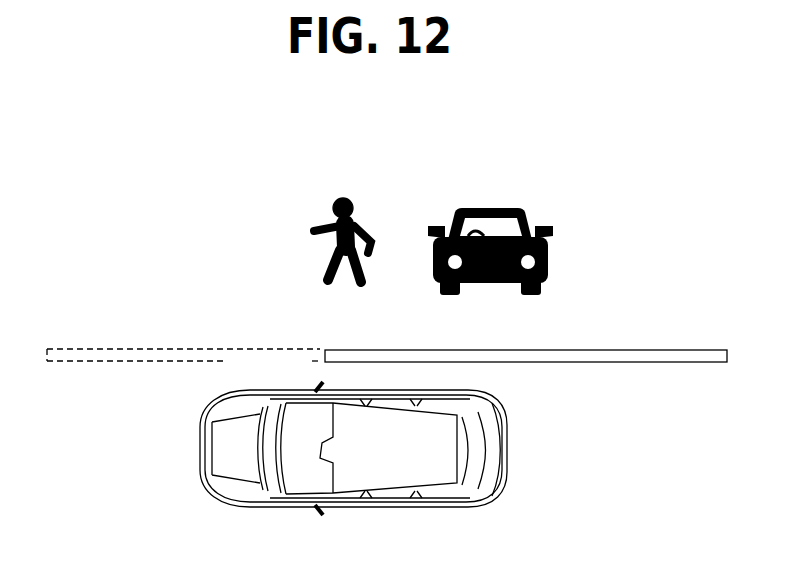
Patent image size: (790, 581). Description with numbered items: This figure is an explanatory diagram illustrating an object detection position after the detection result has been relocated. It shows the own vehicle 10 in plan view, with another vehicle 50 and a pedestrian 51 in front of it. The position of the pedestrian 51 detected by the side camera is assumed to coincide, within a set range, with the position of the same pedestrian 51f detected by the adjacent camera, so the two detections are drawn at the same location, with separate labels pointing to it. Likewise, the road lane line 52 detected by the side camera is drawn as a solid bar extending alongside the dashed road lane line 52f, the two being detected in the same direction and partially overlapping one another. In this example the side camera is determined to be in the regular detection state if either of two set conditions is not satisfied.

The own vehicle 10 is at (200, 452).
The other vehicle 50 is at (490, 208).
The pedestrian 51 is at (362, 202).
The pedestrian 51f is at (325, 202).
The road lane line 52 is at (655, 350).
The lane line frame (image region) 52f is at (123, 343).